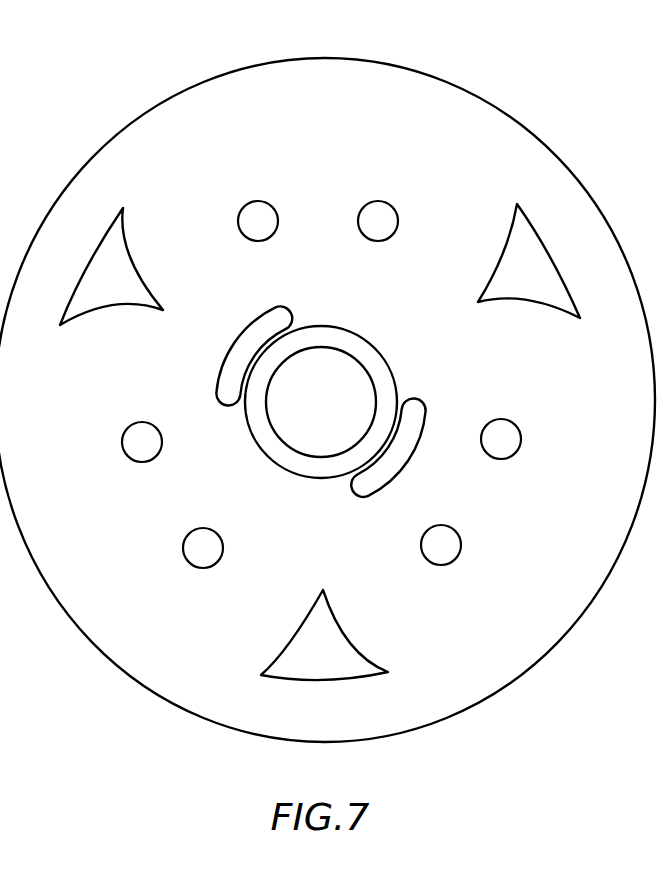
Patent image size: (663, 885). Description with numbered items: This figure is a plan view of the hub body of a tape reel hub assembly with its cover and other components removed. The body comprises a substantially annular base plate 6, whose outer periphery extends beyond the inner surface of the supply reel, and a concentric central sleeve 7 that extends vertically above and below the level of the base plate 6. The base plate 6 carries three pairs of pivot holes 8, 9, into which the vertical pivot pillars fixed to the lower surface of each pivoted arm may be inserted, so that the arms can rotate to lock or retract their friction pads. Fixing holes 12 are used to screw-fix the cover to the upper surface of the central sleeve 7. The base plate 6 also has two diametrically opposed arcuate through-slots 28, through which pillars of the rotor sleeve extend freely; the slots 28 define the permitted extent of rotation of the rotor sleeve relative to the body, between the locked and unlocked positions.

The annular base plate 6 is at (322, 77).
The central sleeve 7 is at (362, 347).
The pivot holes 8 is at (251, 212).
The pivot holes 9 is at (378, 213).
The fixing holes 12 is at (92, 267).
The arcuate through-slots 28 is at (232, 360).